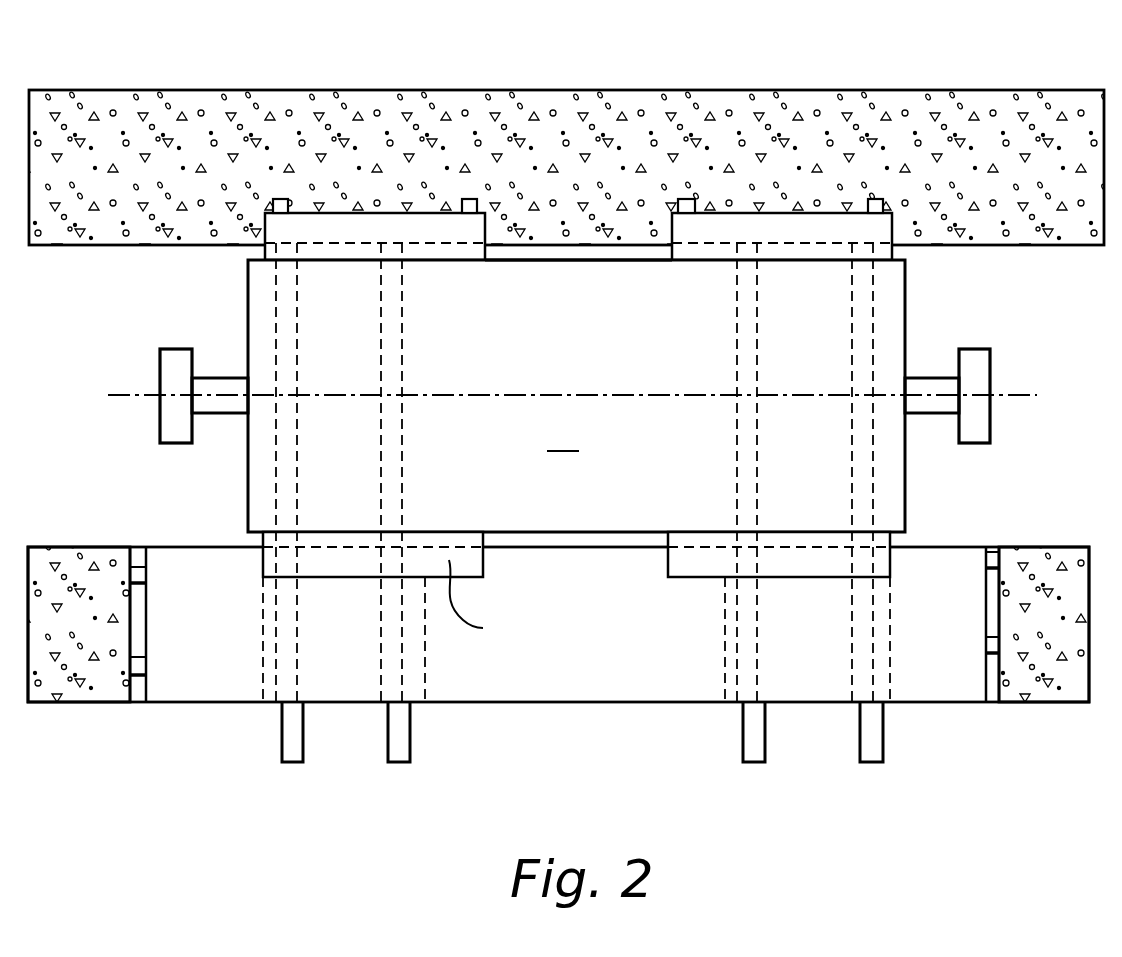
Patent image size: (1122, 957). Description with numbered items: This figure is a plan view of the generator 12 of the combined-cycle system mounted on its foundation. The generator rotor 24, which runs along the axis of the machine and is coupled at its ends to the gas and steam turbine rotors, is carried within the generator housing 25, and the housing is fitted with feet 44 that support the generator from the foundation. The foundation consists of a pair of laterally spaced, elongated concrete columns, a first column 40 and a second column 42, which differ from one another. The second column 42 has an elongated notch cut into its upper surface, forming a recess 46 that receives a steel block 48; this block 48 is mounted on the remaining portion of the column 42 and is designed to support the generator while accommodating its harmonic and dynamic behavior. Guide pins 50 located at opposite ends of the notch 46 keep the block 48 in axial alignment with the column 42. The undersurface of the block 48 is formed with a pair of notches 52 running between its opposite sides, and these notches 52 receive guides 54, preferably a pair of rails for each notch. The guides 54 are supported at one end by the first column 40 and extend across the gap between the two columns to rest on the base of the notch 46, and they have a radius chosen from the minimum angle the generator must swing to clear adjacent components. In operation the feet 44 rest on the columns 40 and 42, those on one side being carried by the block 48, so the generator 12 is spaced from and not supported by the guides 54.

The generator 12 is at (576, 396).
The generator rotor 24 is at (223, 377).
The generator housing 25 is at (610, 260).
The foundation column 40 is at (471, 100).
The foundation column 42 is at (82, 684).
The feet 44 is at (863, 232).
The notch 46 is at (998, 602).
The block 48 is at (588, 675).
The guide pins 50 is at (140, 667).
The notches 52 is at (728, 672).
The guides 54 is at (298, 738).